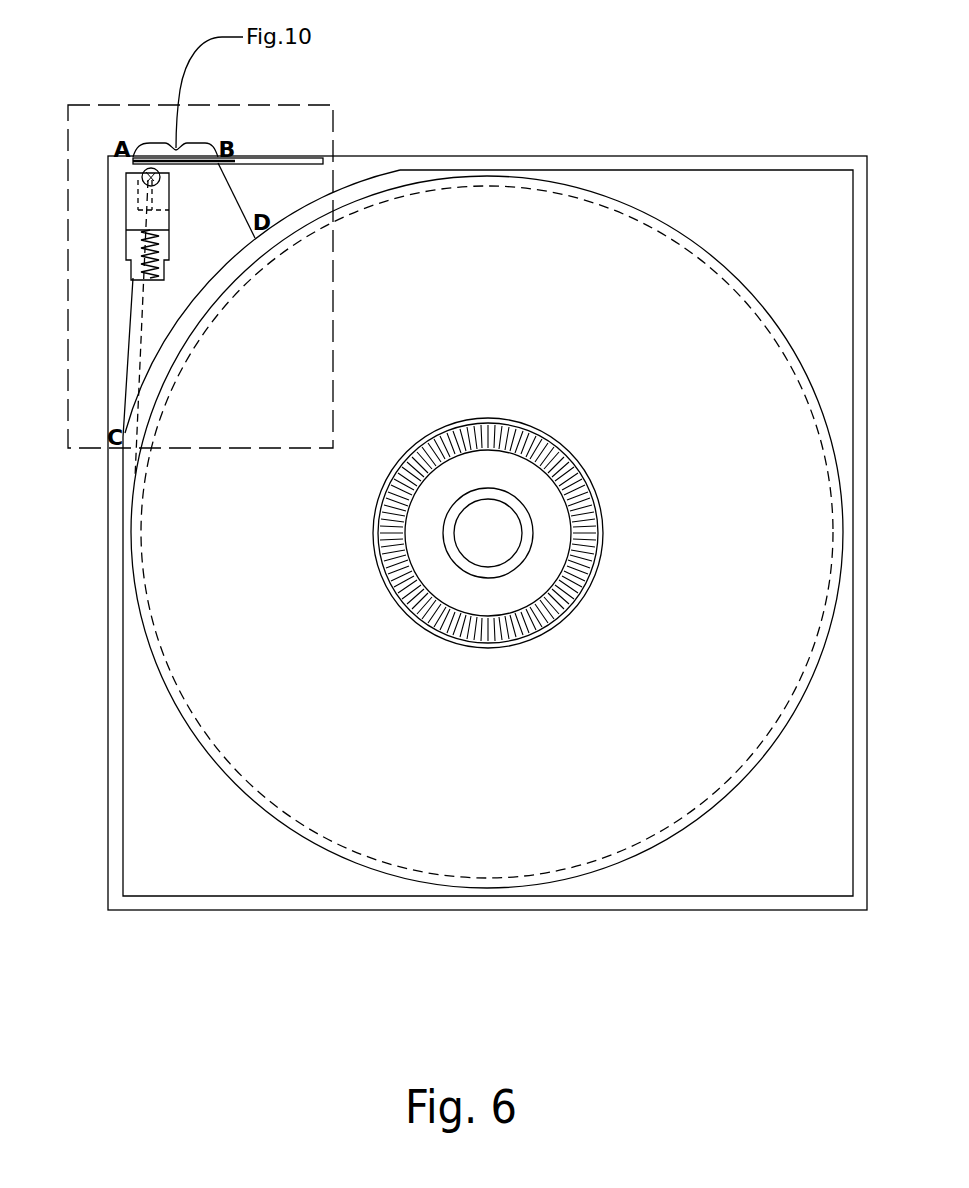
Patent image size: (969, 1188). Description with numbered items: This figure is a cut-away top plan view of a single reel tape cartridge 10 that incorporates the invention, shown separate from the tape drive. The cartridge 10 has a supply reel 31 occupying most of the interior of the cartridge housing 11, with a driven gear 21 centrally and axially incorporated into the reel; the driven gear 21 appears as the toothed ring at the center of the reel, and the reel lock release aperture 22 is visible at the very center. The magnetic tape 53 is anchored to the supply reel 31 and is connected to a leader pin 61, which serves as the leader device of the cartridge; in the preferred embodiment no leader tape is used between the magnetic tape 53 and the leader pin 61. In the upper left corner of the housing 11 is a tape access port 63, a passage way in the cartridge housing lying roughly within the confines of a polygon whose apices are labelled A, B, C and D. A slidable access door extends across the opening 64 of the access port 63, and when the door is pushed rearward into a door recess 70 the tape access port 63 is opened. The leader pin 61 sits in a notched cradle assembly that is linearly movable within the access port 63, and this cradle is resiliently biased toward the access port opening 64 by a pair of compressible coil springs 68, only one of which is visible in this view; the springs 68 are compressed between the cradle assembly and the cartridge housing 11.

The single reel tape cartridge 10 is at (690, 140).
The cartridge housing 11 is at (688, 910).
The driven gear 21 is at (506, 626).
The reel lock release aperture 22 is at (478, 572).
The supply reel 31 is at (482, 247).
The magnetic tape 53 is at (142, 320).
The leader pin 61 is at (148, 175).
The tape access port 63 is at (220, 235).
The opening 64 is at (174, 145).
The compressible coil springs 68 is at (145, 250).
The door recess 70 is at (290, 162).